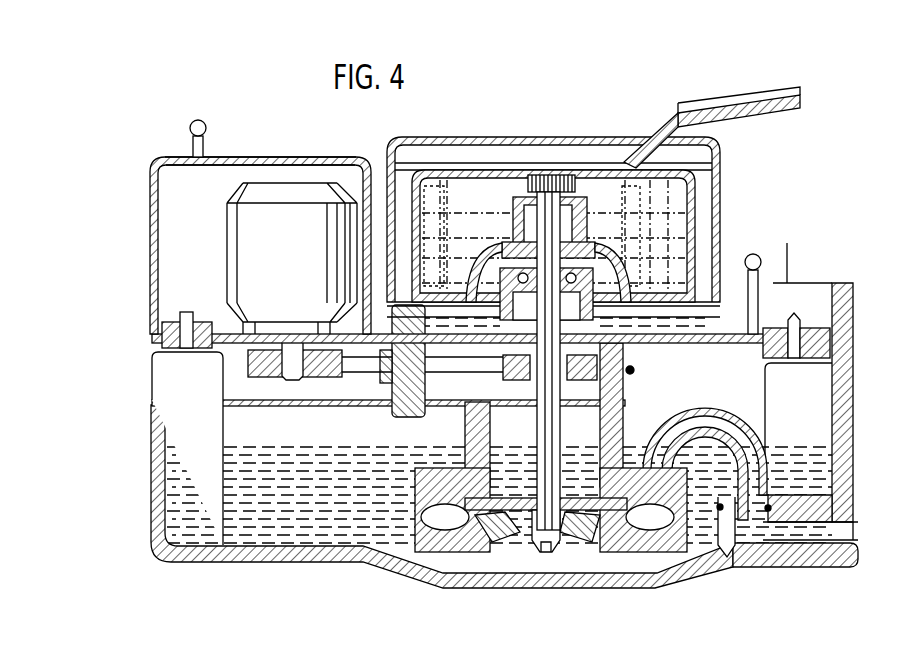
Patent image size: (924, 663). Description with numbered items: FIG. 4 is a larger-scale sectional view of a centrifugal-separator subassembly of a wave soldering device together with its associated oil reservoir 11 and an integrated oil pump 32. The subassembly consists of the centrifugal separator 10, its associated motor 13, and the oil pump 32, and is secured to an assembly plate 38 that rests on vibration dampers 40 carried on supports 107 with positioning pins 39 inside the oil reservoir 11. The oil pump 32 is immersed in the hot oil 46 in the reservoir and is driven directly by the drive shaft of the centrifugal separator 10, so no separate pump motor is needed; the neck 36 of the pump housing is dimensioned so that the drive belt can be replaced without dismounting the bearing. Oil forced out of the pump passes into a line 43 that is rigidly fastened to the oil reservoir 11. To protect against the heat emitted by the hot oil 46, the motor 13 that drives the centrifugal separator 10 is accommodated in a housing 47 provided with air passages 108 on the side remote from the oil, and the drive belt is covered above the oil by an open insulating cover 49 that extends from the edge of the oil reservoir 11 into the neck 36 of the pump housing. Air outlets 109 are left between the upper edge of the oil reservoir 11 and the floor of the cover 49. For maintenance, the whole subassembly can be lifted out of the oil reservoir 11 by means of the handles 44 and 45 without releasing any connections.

The centrifugal separator 10 is at (538, 89).
The oil reservoir 11 is at (261, 556).
The motor 13 is at (245, 237).
The oil pump 32 is at (472, 471).
The housing neck 36 is at (626, 396).
The assembly plate 38 is at (692, 346).
The positioning pins 39 is at (797, 318).
The vibration dampers 40 is at (830, 330).
The line 43 is at (808, 535).
The handle 44 is at (194, 121).
The handle 45 is at (758, 256).
The hot oil 46 is at (336, 523).
The housing 47 is at (268, 157).
The insulating cover 49 is at (185, 393).
The supports 107 is at (182, 434).
The air passages 108 is at (150, 262).
The air outlets 109 is at (152, 404).